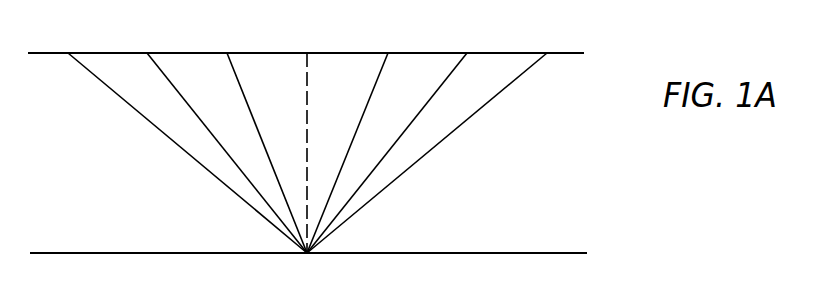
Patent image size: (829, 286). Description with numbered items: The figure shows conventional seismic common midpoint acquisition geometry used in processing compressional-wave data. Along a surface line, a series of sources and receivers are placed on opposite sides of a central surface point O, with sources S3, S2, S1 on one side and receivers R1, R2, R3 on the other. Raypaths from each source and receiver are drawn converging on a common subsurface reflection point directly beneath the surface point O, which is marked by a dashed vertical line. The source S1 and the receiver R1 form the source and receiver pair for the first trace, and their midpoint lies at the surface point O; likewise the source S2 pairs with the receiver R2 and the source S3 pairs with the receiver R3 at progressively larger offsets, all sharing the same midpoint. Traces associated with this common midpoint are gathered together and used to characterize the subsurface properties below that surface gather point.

The source S3 is at (174, 135).
The source S2 is at (212, 135).
The source S1 is at (254, 135).
The surface point O is at (306, 135).
The receiver R1 is at (359, 135).
The receiver R2 is at (400, 135).
The receiver R3 is at (441, 135).